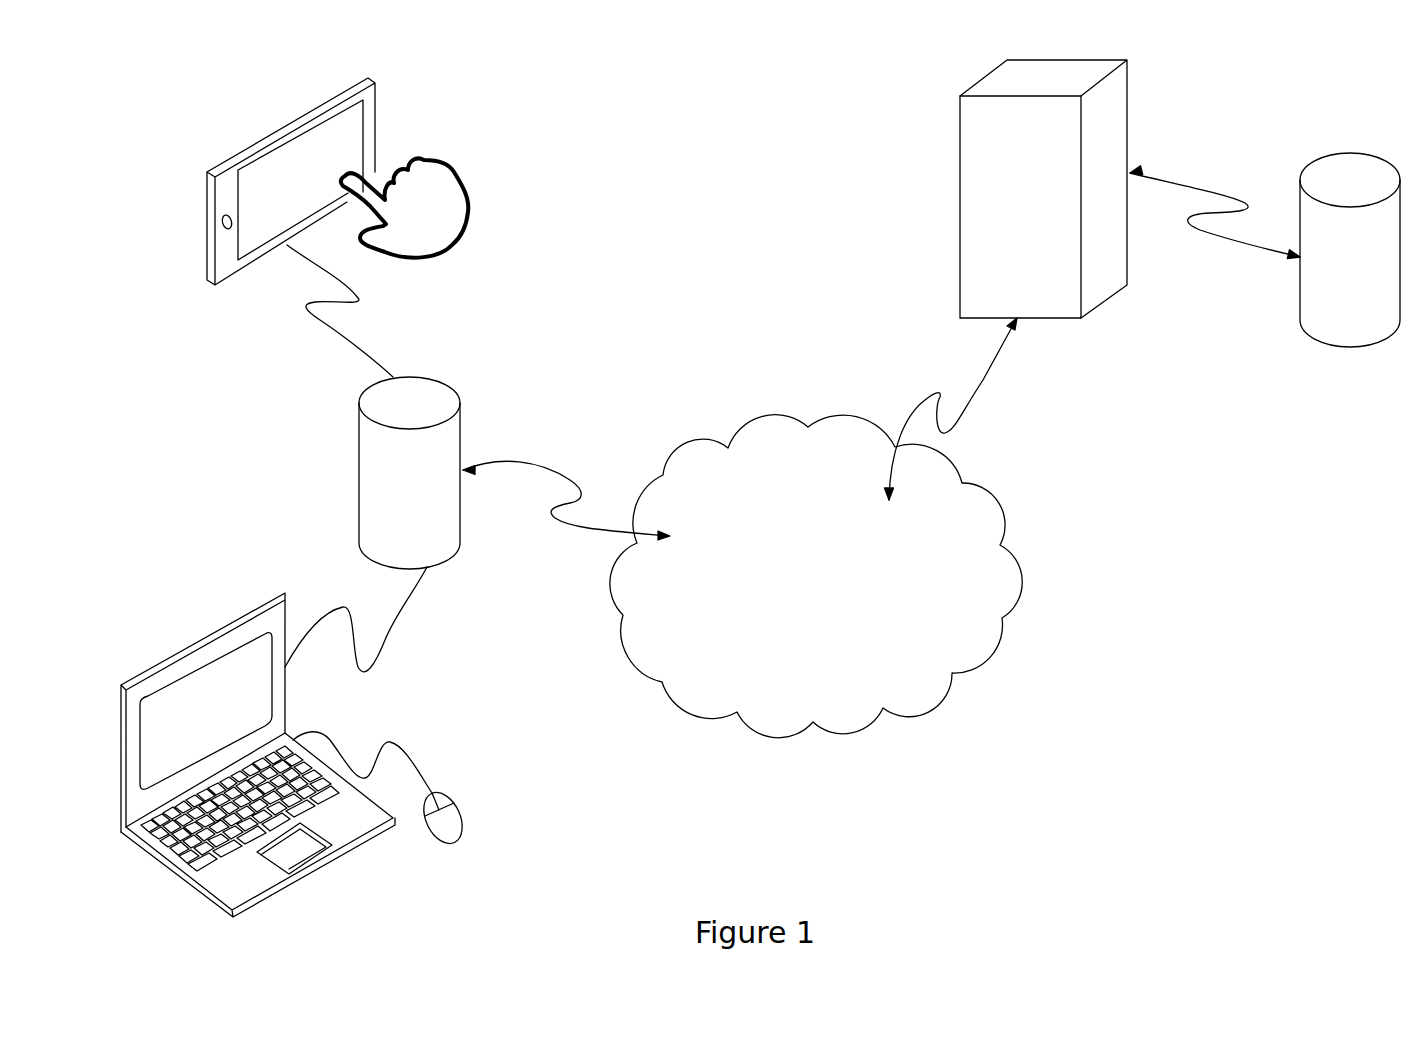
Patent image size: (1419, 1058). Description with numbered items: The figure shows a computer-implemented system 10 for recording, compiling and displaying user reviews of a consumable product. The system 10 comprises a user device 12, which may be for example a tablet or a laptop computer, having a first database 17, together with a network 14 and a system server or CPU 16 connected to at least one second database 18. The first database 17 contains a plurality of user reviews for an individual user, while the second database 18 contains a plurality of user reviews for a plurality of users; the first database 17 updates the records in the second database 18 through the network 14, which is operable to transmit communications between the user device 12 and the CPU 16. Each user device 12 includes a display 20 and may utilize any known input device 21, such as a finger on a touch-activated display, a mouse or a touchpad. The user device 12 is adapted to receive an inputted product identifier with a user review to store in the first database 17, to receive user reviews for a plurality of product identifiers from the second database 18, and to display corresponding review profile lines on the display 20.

The computer-implemented system 10 is at (1135, 693).
The user device 12 is at (235, 153).
The network 14 is at (830, 695).
The system server or CPU 16 is at (960, 205).
The first database 17 is at (358, 470).
The second database 18 is at (1350, 347).
The display 20 is at (298, 150).
The input device 21 is at (345, 172).